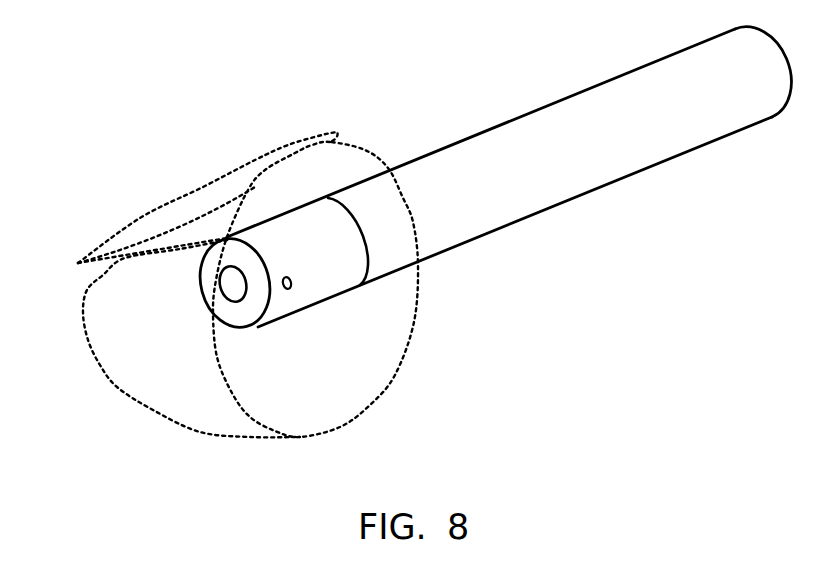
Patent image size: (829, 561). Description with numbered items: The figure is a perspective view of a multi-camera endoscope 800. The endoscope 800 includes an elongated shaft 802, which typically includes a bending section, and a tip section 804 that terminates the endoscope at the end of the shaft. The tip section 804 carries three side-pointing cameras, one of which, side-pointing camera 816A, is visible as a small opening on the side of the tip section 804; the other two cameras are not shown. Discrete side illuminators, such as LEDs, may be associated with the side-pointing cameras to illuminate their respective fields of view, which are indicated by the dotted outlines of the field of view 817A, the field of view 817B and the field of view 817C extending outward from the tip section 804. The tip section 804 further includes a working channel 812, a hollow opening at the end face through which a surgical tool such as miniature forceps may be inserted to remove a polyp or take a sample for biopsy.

The endoscope 800 is at (409, 256).
The elongated shaft 802 is at (502, 123).
The tip section 804 is at (317, 247).
The working channel 812 is at (233, 285).
The side-pointing camera 816A is at (289, 290).
The field of view 817A is at (382, 387).
The field of view 817B is at (203, 188).
The field of view 817C is at (118, 390).